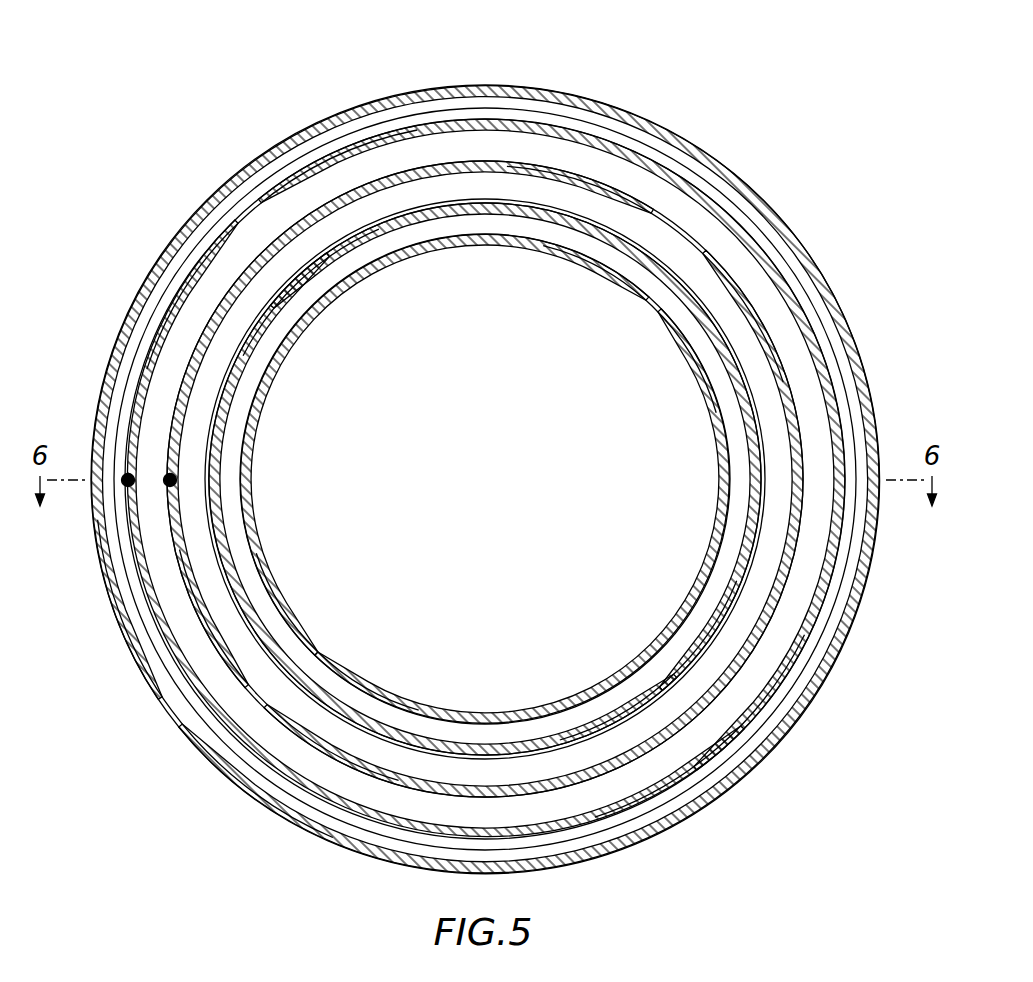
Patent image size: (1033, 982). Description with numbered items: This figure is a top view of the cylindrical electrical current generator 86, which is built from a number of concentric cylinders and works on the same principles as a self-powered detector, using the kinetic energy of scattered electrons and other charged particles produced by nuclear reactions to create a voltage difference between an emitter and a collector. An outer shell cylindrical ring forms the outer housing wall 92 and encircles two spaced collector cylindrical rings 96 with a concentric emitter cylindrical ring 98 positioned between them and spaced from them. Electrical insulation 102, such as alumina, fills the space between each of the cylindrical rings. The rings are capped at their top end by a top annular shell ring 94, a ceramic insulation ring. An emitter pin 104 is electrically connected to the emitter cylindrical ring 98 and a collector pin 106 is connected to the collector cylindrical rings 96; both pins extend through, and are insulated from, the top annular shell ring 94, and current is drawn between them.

The electrical current generator 86 is at (763, 162).
The outer housing wall 92 is at (204, 222).
The top annular shell ring 94 is at (463, 106).
The collector cylindrical rings 96 is at (800, 330).
The emitter cylindrical ring 98 is at (605, 191).
The electrical insulation 102 is at (523, 479).
The emitter pin 104 is at (175, 478).
The collector pin 106 is at (124, 478).